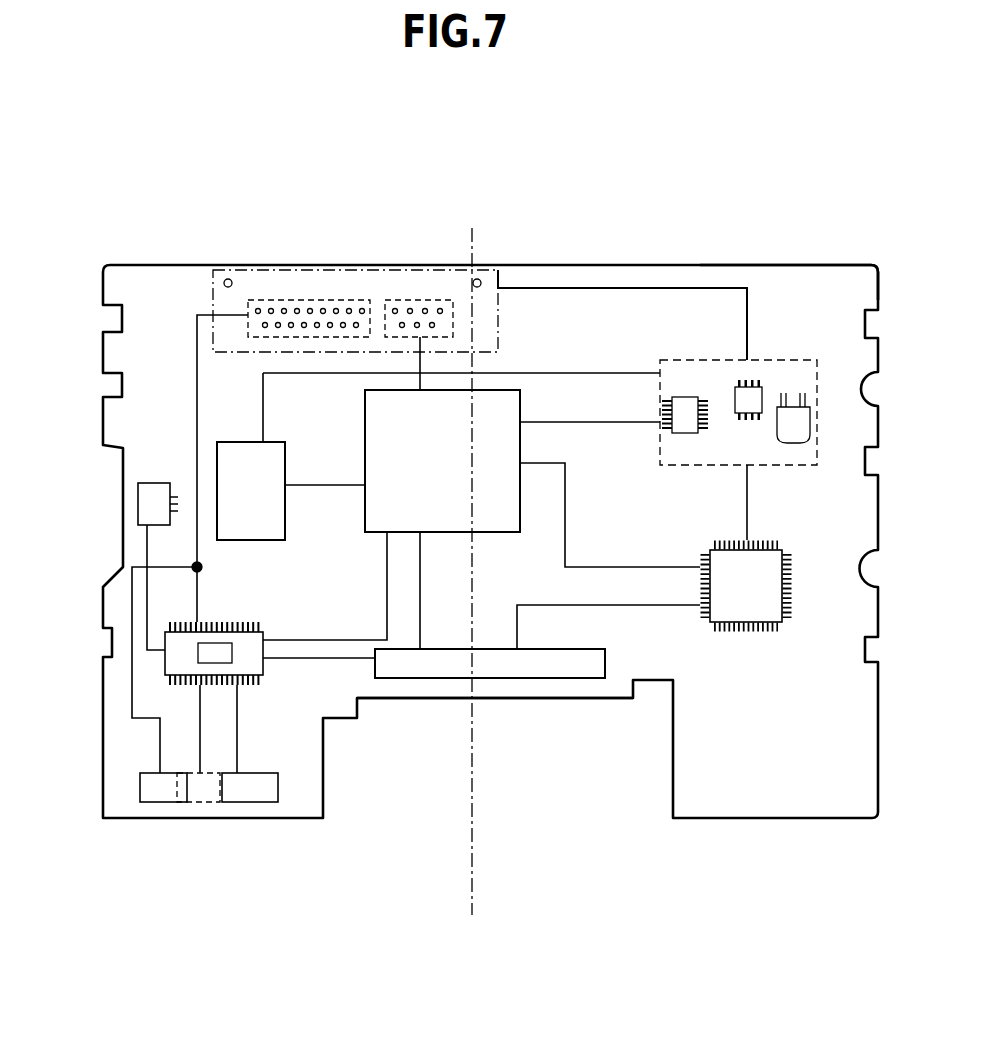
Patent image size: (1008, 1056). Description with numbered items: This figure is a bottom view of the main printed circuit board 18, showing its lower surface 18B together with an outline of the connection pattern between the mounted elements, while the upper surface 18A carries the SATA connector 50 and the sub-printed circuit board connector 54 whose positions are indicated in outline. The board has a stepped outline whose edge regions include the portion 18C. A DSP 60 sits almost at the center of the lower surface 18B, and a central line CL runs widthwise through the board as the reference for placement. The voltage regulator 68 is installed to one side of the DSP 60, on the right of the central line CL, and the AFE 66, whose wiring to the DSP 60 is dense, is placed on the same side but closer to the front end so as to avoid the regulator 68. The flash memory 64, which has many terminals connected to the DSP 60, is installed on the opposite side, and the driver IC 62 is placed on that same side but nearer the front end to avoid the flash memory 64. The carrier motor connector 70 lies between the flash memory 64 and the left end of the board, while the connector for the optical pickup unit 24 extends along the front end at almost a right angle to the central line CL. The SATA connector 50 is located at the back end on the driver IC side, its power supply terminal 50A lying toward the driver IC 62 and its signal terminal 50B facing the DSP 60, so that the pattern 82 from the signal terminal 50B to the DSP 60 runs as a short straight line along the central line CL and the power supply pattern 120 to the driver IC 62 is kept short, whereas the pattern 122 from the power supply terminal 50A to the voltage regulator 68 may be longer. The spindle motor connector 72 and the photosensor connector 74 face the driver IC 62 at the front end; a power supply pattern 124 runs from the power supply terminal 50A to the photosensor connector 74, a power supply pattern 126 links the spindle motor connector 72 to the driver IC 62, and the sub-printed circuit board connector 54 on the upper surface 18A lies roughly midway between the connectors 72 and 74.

The main printed circuit board 18 is at (693, 208).
The upper surface 18A is at (762, 281).
The lower surface 18B is at (793, 290).
The board third portion 18C is at (390, 700).
The optical pickup unit 24 is at (545, 670).
The SATA connector 50 is at (360, 268).
The power supply terminal 50A is at (263, 298).
The signal terminal 50B is at (422, 298).
The sub-printed circuit board connector 54 is at (207, 800).
The DSP 60 is at (492, 525).
The driver IC 62 is at (250, 645).
The flash memory 64 is at (272, 462).
The AFE 66 is at (748, 612).
The voltage regulator 68 is at (683, 465).
The carrier motor connector 70 is at (162, 490).
The spindle motor connector 72 is at (262, 790).
The photosensor connector 74 is at (163, 790).
The pattern 82 is at (425, 365).
The power supply pattern 120 is at (197, 362).
The pattern 122 is at (565, 285).
The power supply pattern 124 is at (132, 690).
The power supply pattern 126 is at (237, 738).
The central line CL is at (474, 880).